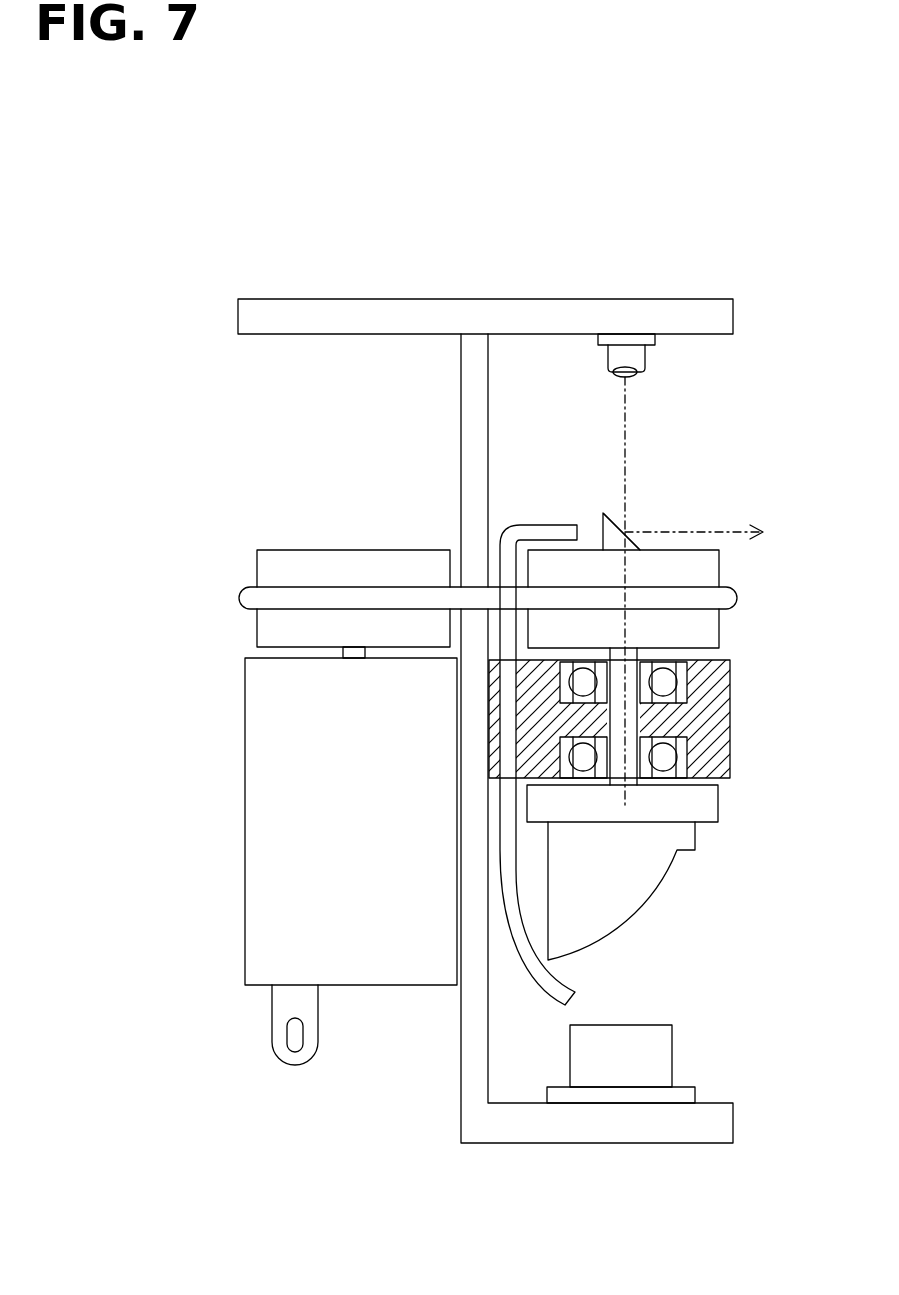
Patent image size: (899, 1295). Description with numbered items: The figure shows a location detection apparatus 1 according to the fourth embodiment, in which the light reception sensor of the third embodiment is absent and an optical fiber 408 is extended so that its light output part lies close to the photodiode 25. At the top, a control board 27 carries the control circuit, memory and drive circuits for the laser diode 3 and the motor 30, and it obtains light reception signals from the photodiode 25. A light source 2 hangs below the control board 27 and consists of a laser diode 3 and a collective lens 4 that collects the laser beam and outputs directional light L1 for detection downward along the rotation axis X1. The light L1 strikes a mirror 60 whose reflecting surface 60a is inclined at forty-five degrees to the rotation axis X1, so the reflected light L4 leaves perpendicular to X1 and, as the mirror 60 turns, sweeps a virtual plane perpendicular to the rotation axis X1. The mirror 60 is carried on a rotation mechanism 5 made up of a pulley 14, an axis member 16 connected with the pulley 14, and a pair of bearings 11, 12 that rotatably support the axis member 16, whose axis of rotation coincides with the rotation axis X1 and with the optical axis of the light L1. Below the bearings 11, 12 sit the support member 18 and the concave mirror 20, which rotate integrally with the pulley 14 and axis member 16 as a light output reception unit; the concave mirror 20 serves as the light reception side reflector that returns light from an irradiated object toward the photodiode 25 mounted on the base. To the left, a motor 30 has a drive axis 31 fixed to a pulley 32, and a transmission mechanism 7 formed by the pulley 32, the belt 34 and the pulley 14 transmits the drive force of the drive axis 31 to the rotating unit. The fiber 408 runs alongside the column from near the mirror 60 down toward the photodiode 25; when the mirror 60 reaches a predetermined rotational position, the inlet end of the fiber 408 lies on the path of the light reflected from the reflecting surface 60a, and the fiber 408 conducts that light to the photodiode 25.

The location detection apparatus 1 is at (658, 260).
The light source 2 is at (680, 372).
The laser diode 3 is at (645, 362).
The collective lens 4 is at (629, 377).
The rotation mechanism 5 is at (646, 715).
The transmission mechanism 7 is at (308, 761).
The bearing 11 is at (690, 688).
The bearing 12 is at (688, 752).
The pulley 14 is at (719, 568).
The axis member 16 is at (634, 713).
The support member 18 is at (718, 803).
The concave mirror 20 is at (695, 838).
The photodiode 25 is at (673, 1060).
The control board 27 is at (295, 299).
The motor 30 is at (245, 798).
The drive axis 31 is at (340, 650).
The pulley 32 is at (257, 568).
The belt 34 is at (239, 598).
The mirror 60 is at (605, 516).
The reflecting surface 60a is at (637, 548).
The optical fiber 408 is at (545, 523).
The light for detection L1 is at (625, 422).
The reflected light L4 is at (707, 532).
The rotation axis X1 is at (625, 637).